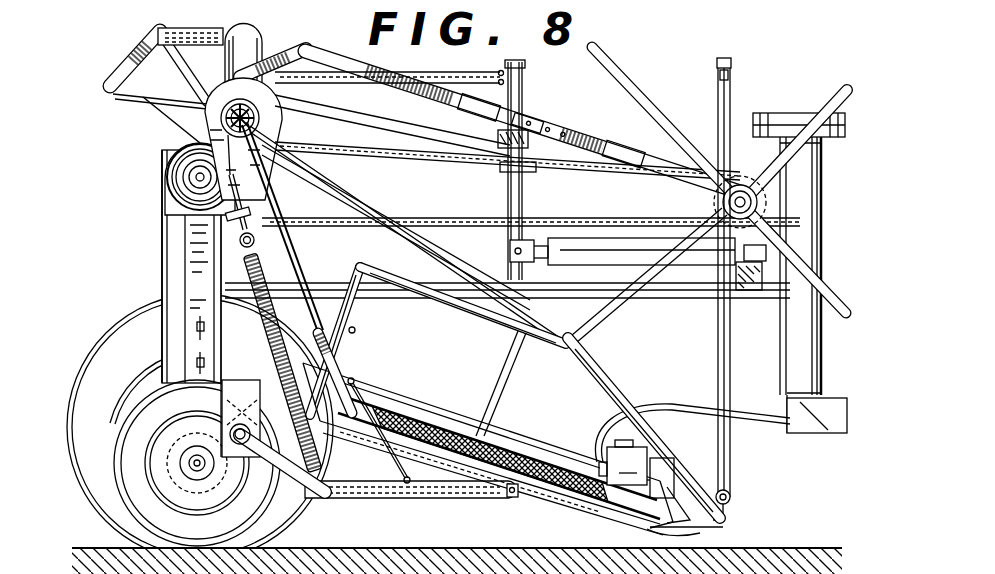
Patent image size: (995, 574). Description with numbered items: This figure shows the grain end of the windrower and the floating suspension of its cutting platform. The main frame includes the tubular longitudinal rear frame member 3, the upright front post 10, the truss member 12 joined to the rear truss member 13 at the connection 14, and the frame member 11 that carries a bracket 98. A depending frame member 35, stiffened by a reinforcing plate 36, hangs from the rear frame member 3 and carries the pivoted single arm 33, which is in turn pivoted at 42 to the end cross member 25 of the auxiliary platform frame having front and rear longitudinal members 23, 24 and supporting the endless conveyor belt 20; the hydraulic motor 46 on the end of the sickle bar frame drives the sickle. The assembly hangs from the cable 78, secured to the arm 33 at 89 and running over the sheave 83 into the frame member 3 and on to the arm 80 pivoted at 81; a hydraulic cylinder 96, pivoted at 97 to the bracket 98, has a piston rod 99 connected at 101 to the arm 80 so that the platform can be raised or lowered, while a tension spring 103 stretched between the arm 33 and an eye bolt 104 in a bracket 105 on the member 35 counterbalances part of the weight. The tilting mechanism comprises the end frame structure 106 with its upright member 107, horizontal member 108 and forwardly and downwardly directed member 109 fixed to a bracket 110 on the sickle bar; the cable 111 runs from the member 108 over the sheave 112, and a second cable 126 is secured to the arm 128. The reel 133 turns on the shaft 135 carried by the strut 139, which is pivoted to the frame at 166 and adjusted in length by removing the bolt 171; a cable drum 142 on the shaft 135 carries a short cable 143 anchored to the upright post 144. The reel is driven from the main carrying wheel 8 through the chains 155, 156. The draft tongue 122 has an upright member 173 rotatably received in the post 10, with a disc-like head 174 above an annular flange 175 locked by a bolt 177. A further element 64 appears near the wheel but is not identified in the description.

The longitudinal rear frame member 3 is at (247, 47).
The main carrying wheel 8 is at (113, 350).
The front frame member or post 10 is at (797, 340).
The frame member 11 is at (367, 124).
The truss member 12 is at (187, 67).
The rear truss member 13 is at (110, 88).
The truss member connection 14 is at (190, 28).
The endless conveyor belt 20 is at (543, 443).
The front longitudinal member 23 is at (652, 500).
The rear longitudinal member 24 is at (350, 368).
The cross member 25 is at (545, 503).
The single arm 33 is at (217, 438).
The depending frame member 35 is at (248, 325).
The reinforcing plate 36 is at (208, 116).
The pivot 42 is at (503, 498).
The power unit or motor 46 is at (623, 462).
The front wheel 64 is at (142, 497).
The cable 78 is at (400, 391).
The arm 80 is at (523, 75).
The pivot 81 is at (517, 167).
The sheave 83 is at (258, 150).
The cable attachment 89 is at (409, 490).
The hydraulic cylinder 96 is at (595, 246).
The pivot 97 is at (762, 252).
The bracket 98 is at (751, 278).
The piston rod 99 is at (543, 248).
The pivotal connection 101 is at (510, 252).
The spring 103 is at (263, 464).
The eye bolt 104 is at (243, 241).
The bracket 105 is at (230, 216).
The end frame structure 106 is at (357, 331).
The upright member 107 is at (363, 310).
The horizontal member 108 is at (468, 320).
The forwardly and downwardly directed member 109 is at (609, 375).
The bracket 110 is at (733, 507).
The cable 111 is at (352, 196).
The sheave 112 is at (268, 126).
The draft tongue 122 is at (834, 428).
The second cable 126 is at (363, 237).
The arm 128 is at (498, 397).
The reel 133 is at (616, 63).
The shaft 135 is at (712, 208).
The strut 139 is at (563, 123).
The cable drum 142 is at (722, 209).
The short cable 143 is at (732, 85).
The upright supporting post 144 is at (730, 60).
The chain 155 is at (160, 277).
The chain 156 is at (420, 160).
The pivot 166 is at (246, 80).
The bolt 171 is at (510, 128).
The upright member 173 is at (808, 415).
The disc-like head 174 is at (805, 116).
The annular flange 175 is at (828, 138).
The bolt 177 is at (770, 113).